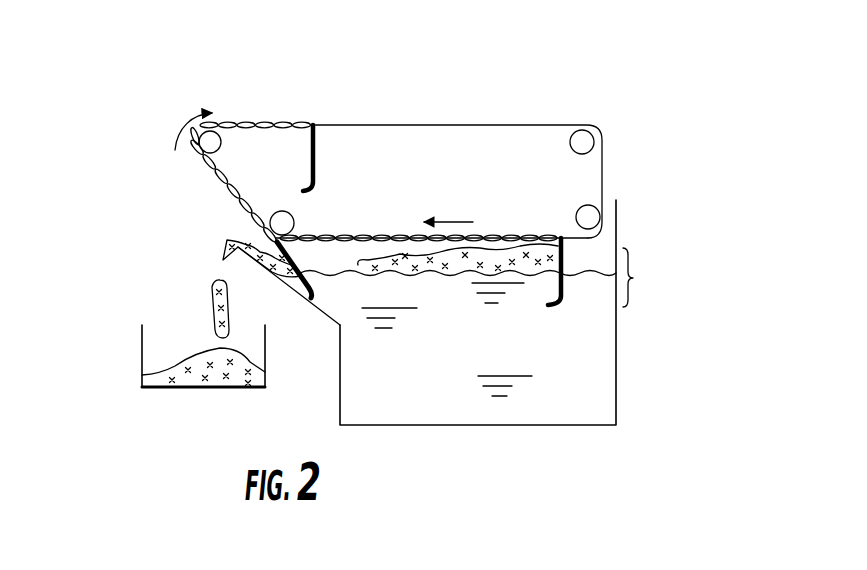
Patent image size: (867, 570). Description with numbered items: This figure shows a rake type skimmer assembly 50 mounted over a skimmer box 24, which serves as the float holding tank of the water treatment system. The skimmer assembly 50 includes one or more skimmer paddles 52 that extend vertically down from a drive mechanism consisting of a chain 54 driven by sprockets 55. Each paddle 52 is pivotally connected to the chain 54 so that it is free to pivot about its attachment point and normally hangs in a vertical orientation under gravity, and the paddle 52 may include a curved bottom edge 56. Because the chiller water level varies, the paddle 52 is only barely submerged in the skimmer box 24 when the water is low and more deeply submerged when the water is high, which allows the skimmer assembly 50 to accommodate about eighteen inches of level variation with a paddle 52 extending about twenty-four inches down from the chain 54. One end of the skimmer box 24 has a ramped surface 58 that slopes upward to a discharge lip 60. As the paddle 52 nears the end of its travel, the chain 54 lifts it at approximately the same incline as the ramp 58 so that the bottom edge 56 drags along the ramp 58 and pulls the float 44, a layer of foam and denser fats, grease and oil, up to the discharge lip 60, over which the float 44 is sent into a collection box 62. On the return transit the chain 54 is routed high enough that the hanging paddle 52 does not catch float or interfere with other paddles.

The skimmer box 24 is at (638, 385).
The float 44 is at (232, 230).
The skimmer assembly 50 is at (552, 68).
The skimmer paddle 52 is at (600, 237).
The chain 54 is at (547, 125).
The sprockets 55 is at (602, 157).
The curved bottom edge 56 is at (563, 298).
The ramped surface 58 is at (330, 318).
The discharge lip 60 is at (212, 247).
The collection box 62 is at (125, 380).